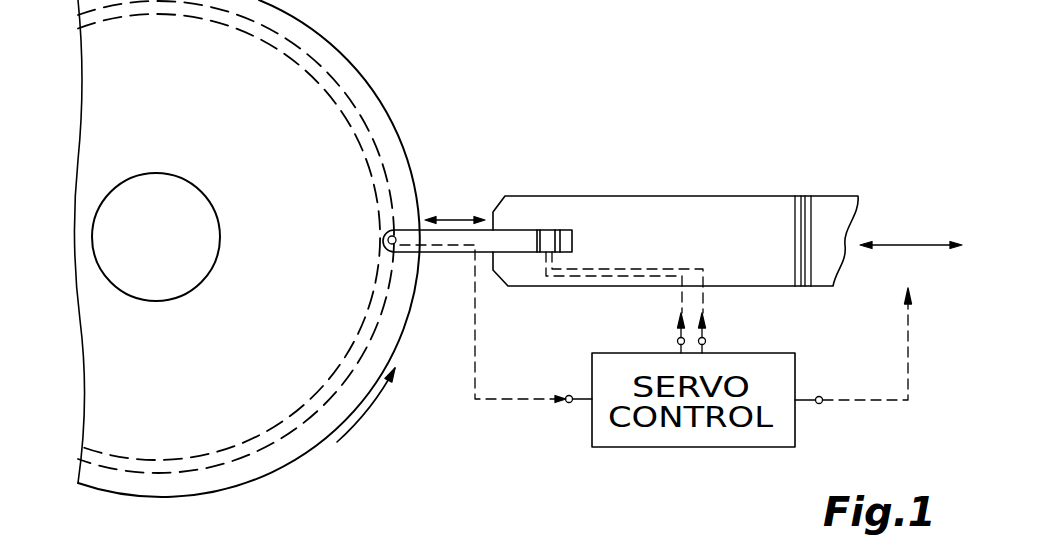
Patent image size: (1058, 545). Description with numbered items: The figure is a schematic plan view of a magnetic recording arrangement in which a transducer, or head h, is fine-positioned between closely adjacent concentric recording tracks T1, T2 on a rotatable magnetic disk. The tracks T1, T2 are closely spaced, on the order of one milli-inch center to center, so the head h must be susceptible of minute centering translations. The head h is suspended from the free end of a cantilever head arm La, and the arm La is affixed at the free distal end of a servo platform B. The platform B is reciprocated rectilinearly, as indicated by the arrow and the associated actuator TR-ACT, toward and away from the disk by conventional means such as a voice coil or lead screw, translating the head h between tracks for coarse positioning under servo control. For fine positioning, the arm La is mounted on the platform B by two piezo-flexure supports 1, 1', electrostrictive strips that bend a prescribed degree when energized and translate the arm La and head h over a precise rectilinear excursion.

The recording track T1 is at (357, 102).
The recording track T2 is at (335, 372).
The head h is at (397, 233).
The head arm La is at (457, 237).
The piezo-flexure support 1 is at (532, 196).
The piezo-flexure support 1' is at (567, 191).
The servo platform B is at (713, 241).
The transducer actuator TR-ACT is at (910, 267).